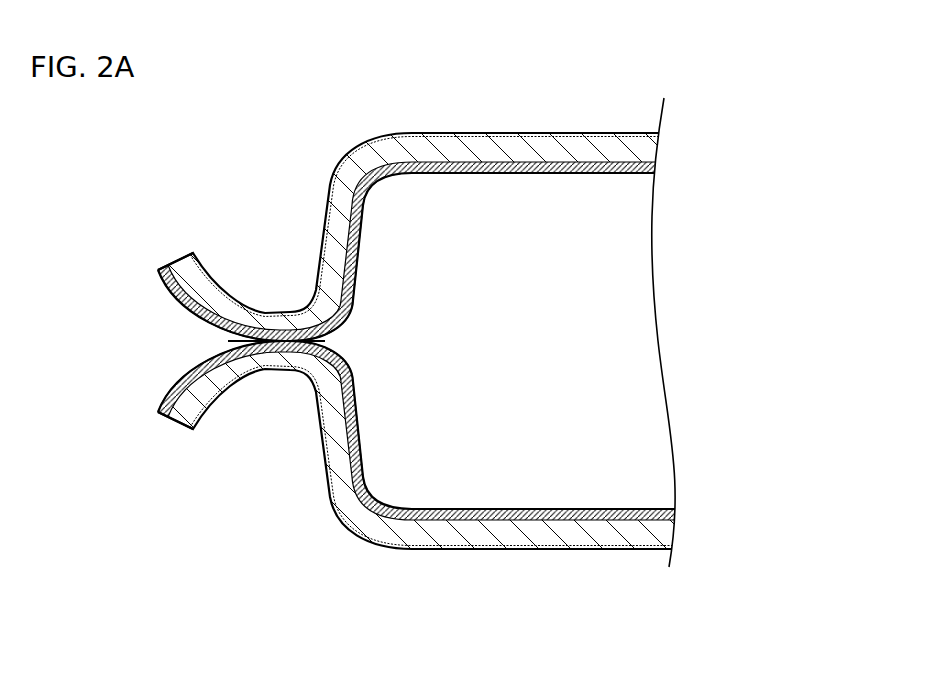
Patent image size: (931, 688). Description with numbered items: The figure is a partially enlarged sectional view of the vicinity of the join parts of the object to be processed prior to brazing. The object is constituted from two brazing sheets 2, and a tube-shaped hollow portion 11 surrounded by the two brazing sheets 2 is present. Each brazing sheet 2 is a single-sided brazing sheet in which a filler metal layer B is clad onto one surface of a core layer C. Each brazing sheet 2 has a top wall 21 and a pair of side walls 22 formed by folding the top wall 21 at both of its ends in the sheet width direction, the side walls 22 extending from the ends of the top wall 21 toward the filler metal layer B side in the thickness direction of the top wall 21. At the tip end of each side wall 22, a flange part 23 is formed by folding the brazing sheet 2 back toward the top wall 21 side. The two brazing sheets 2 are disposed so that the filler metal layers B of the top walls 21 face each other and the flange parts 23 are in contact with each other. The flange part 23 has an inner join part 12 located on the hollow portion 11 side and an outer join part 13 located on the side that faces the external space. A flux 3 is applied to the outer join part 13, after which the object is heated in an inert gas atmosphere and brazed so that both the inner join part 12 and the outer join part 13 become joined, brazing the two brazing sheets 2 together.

The brazing sheet 2 is at (417, 347).
The flux 3 is at (422, 132).
The hollow portion 11 is at (462, 332).
The inner join part 12 is at (290, 339).
The outer join part 13 is at (238, 340).
The top wall 21 is at (505, 152).
The side wall 22 is at (340, 237).
The flange part 23 is at (193, 283).
The filler metal layer B is at (578, 176).
The core layer C is at (553, 140).